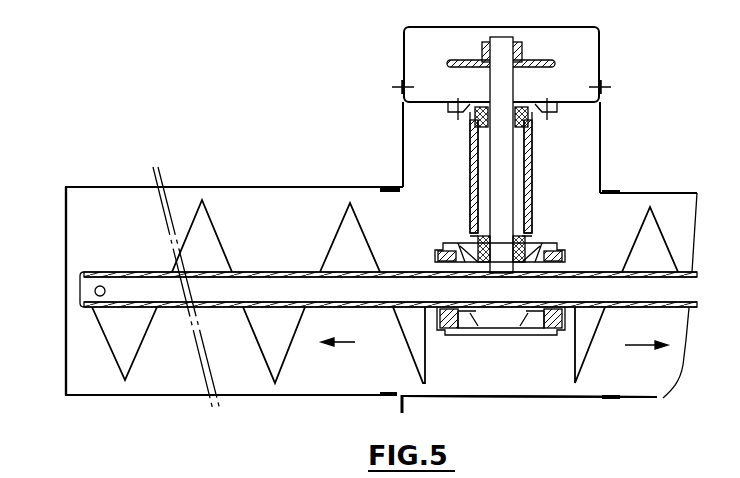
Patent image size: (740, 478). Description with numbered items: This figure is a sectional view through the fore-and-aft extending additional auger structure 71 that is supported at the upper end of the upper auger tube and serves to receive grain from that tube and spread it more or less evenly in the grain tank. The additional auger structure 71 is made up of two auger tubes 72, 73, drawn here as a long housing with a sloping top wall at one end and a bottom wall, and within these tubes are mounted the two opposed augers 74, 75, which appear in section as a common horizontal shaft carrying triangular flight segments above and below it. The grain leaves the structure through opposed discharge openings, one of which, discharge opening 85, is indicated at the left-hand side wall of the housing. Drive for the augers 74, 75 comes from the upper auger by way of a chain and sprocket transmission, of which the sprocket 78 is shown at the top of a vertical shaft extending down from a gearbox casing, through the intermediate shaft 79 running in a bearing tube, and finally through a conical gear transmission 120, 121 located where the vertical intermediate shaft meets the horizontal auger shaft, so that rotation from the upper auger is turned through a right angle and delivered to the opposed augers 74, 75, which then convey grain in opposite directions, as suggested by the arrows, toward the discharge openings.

The additional auger structure 71 is at (358, 316).
The auger tube 72 is at (641, 398).
The auger tube 73 is at (148, 395).
The auger 74 is at (593, 313).
The auger 75 is at (267, 368).
The chain and sprocket transmission 78 is at (557, 63).
The intermediate shaft 79 is at (518, 177).
The discharge opening 85 is at (66, 338).
The conical gear transmission 120 is at (562, 243).
The conical gear transmission 121 is at (502, 330).